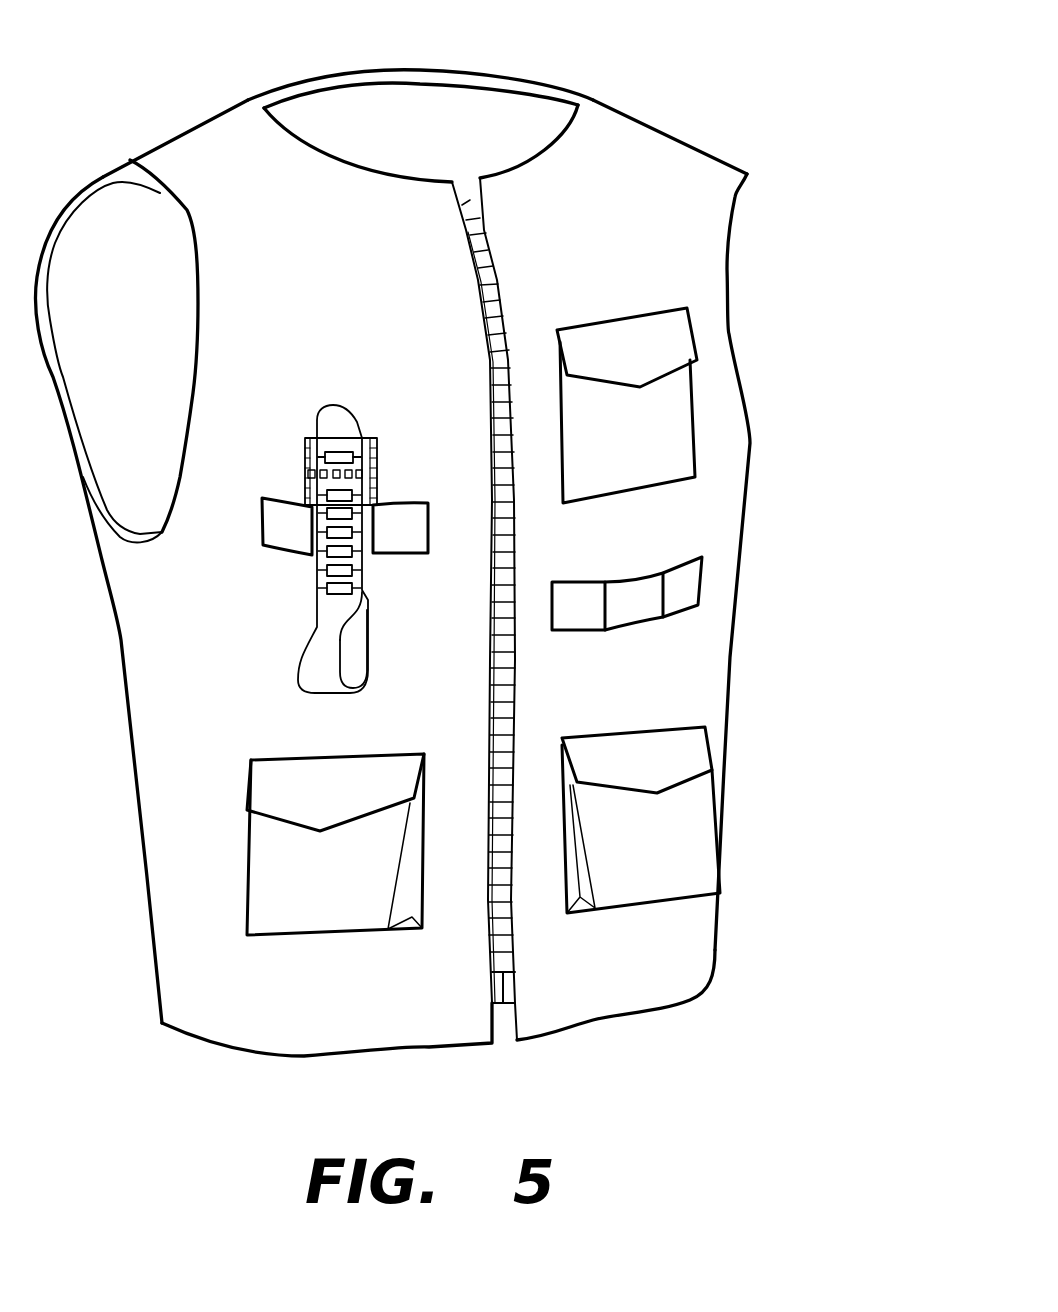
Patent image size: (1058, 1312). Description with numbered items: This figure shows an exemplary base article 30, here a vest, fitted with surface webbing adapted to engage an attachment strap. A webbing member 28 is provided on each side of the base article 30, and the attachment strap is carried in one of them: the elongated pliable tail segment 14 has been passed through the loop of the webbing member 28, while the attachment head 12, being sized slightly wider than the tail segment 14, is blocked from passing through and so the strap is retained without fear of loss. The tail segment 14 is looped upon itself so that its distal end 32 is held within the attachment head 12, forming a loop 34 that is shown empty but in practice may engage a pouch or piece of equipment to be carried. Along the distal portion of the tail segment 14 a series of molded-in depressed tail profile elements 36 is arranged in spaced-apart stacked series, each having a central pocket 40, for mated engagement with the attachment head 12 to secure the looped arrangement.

The base article 30 is at (722, 88).
The attachment head 12 is at (376, 461).
The tail segment 14 is at (311, 613).
The webbing member 28 is at (398, 505).
The distal end 32 is at (328, 428).
The loop 34 is at (355, 662).
The depressed tail profile elements 36 is at (343, 449).
The central pocket 40 is at (333, 532).